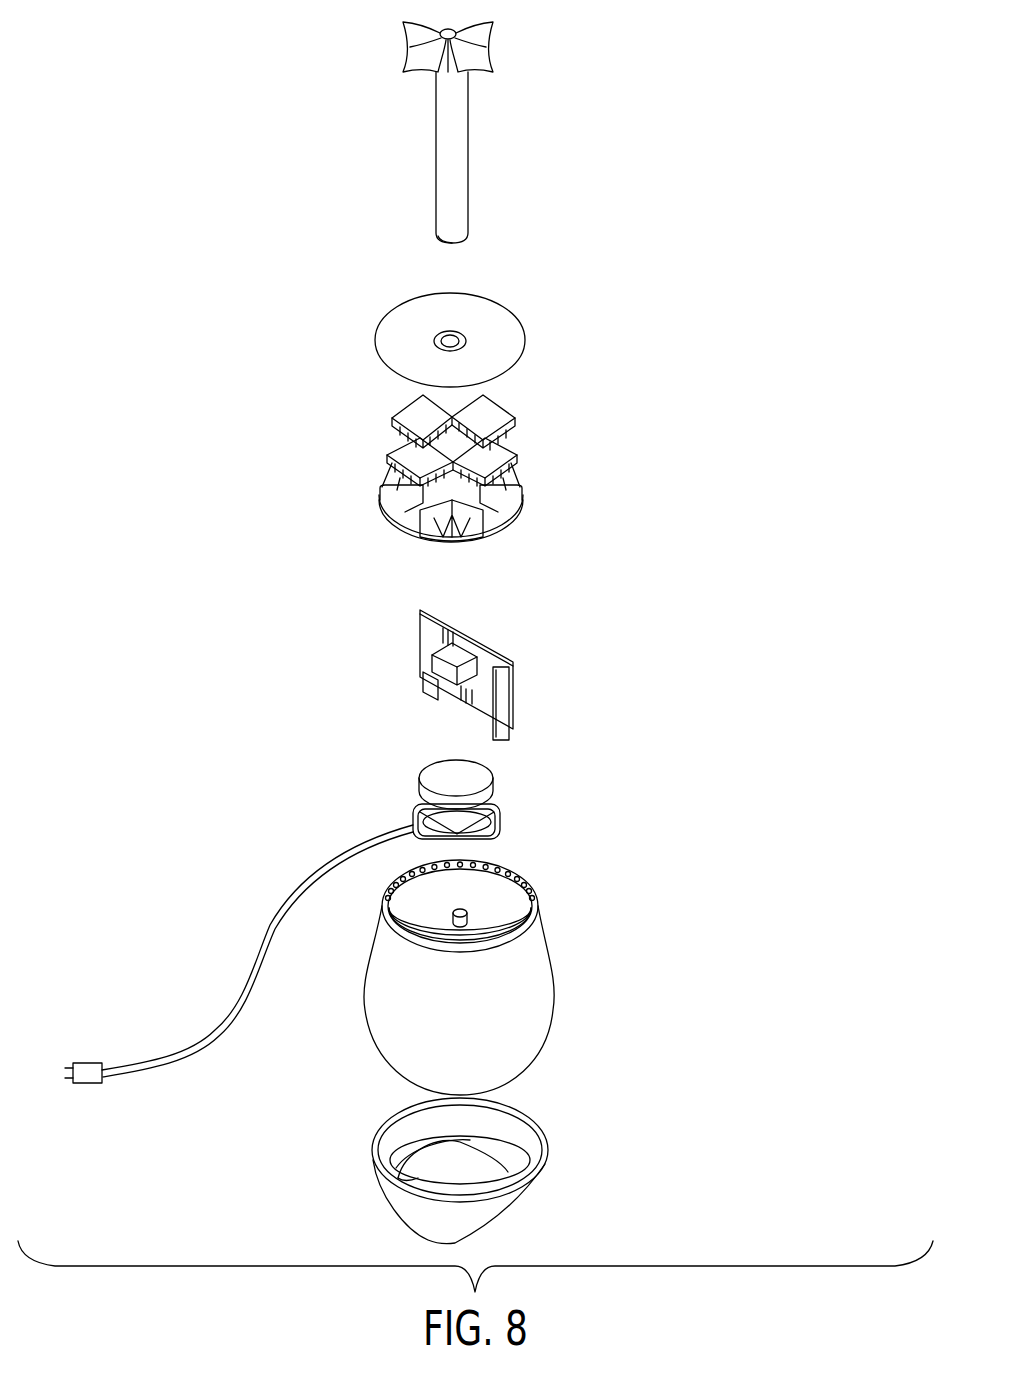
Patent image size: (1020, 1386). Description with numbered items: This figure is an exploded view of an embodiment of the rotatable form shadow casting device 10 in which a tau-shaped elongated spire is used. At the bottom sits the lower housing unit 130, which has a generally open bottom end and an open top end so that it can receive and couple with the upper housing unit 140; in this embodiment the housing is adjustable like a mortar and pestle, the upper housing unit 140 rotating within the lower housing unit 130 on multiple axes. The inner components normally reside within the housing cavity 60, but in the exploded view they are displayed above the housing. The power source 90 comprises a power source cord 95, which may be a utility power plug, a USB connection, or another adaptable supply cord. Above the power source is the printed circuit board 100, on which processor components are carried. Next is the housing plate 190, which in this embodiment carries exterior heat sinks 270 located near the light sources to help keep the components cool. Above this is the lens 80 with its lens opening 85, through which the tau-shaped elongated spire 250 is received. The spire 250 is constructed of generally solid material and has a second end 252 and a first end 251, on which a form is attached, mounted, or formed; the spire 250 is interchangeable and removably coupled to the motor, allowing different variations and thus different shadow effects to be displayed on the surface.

The rotatable form shadow casting device 10 is at (758, 356).
The first end 251 is at (480, 40).
The tau-shaped elongated spire 250 is at (456, 153).
The second end 252 is at (437, 243).
The lens 80 is at (527, 343).
The lens opening 85 is at (466, 337).
The exterior heat sinks 270 is at (502, 418).
The housing plate 190 is at (523, 502).
The printed circuit board 100 is at (515, 672).
The power source 90 is at (497, 796).
The power source cord 95 is at (80, 1122).
The upper housing unit 140 is at (553, 980).
The housing cavity 60 is at (507, 898).
The lower housing unit 130 is at (548, 1155).